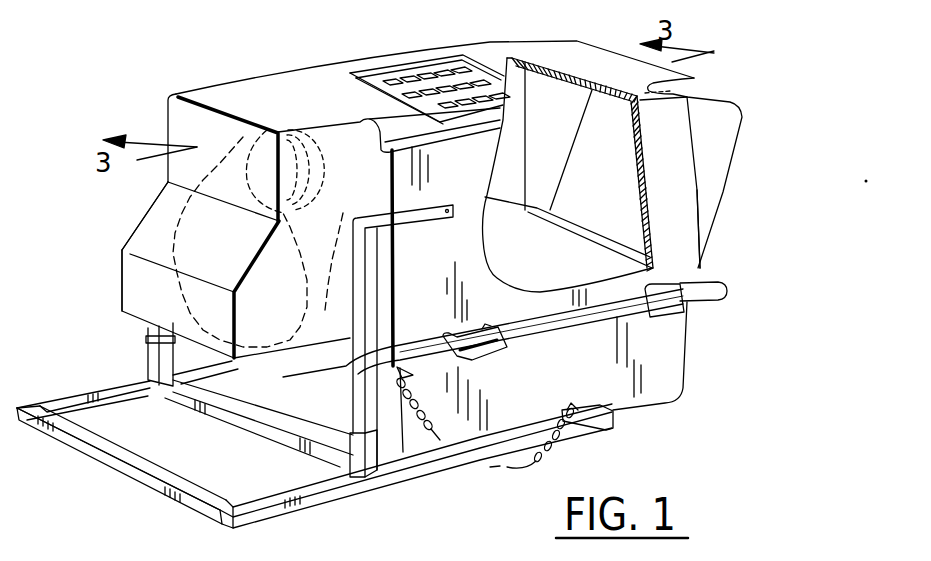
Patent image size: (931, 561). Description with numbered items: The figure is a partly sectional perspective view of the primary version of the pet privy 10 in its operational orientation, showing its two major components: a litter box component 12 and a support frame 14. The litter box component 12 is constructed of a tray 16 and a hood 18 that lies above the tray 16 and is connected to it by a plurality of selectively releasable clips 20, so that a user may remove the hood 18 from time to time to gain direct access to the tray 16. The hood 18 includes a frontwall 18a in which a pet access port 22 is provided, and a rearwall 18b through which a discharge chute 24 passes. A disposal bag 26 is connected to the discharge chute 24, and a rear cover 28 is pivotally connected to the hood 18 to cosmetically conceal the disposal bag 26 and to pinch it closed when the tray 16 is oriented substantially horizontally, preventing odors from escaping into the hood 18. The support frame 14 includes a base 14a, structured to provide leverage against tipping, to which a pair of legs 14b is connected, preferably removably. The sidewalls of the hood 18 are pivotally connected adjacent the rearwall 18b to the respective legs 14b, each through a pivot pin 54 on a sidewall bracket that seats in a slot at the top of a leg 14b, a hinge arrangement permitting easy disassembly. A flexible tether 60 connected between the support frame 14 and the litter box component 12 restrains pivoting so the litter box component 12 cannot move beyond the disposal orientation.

The pet privy 10 is at (408, 44).
The litter box component 12 is at (203, 70).
The support frame 14 is at (400, 462).
The base 14a is at (337, 498).
The legs 14b is at (148, 332).
The tray 16 is at (437, 437).
The hood 18 is at (688, 267).
The frontwall 18a is at (695, 161).
The rearwall 18b is at (264, 242).
The selectively releasable clips 20 is at (613, 348).
The pet access port 22 is at (713, 230).
The discharge chute 24 is at (280, 128).
The disposal bag 26 is at (150, 226).
The rear cover 28 is at (143, 227).
The pivot pin 54 is at (433, 204).
The flexible tether 60 is at (548, 455).